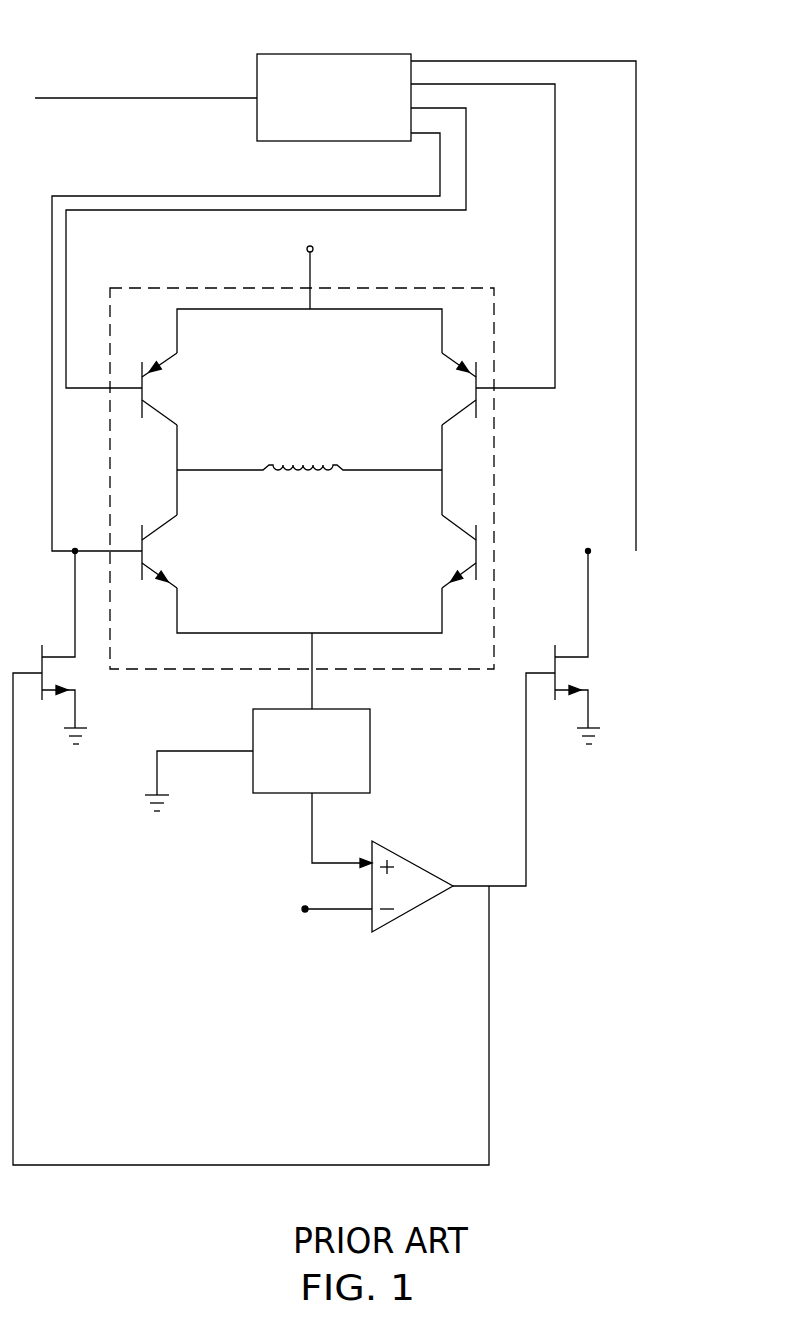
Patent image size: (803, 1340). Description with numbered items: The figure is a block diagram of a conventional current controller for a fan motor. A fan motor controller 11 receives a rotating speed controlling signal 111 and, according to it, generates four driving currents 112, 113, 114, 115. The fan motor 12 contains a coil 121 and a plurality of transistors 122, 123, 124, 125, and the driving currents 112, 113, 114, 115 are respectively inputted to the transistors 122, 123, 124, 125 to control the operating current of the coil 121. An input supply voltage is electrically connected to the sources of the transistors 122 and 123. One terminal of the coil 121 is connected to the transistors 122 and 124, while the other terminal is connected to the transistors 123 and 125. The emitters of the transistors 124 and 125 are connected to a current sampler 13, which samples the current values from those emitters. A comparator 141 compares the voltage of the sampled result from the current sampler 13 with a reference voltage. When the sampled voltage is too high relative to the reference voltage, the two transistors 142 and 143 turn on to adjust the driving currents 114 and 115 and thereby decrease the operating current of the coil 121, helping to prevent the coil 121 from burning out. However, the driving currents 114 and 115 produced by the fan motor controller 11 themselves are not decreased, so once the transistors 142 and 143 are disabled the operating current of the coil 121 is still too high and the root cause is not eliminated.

The fan motor controller 11 is at (331, 55).
The rotating speed controlling signal 111 is at (146, 82).
The driving current 112 is at (266, 236).
The driving current 113 is at (483, 224).
The driving current 114 is at (257, 330).
The driving current 115 is at (523, 293).
The fan motor 12 is at (155, 288).
The coil 121 is at (310, 462).
The transistor 122 is at (172, 391).
The transistor 123 is at (446, 387).
The transistor 124 is at (172, 552).
The transistor 125 is at (446, 550).
The current sampler 13 is at (370, 751).
The comparator 141 is at (411, 912).
The transistor 142 is at (42, 697).
The transistor 143 is at (555, 697).